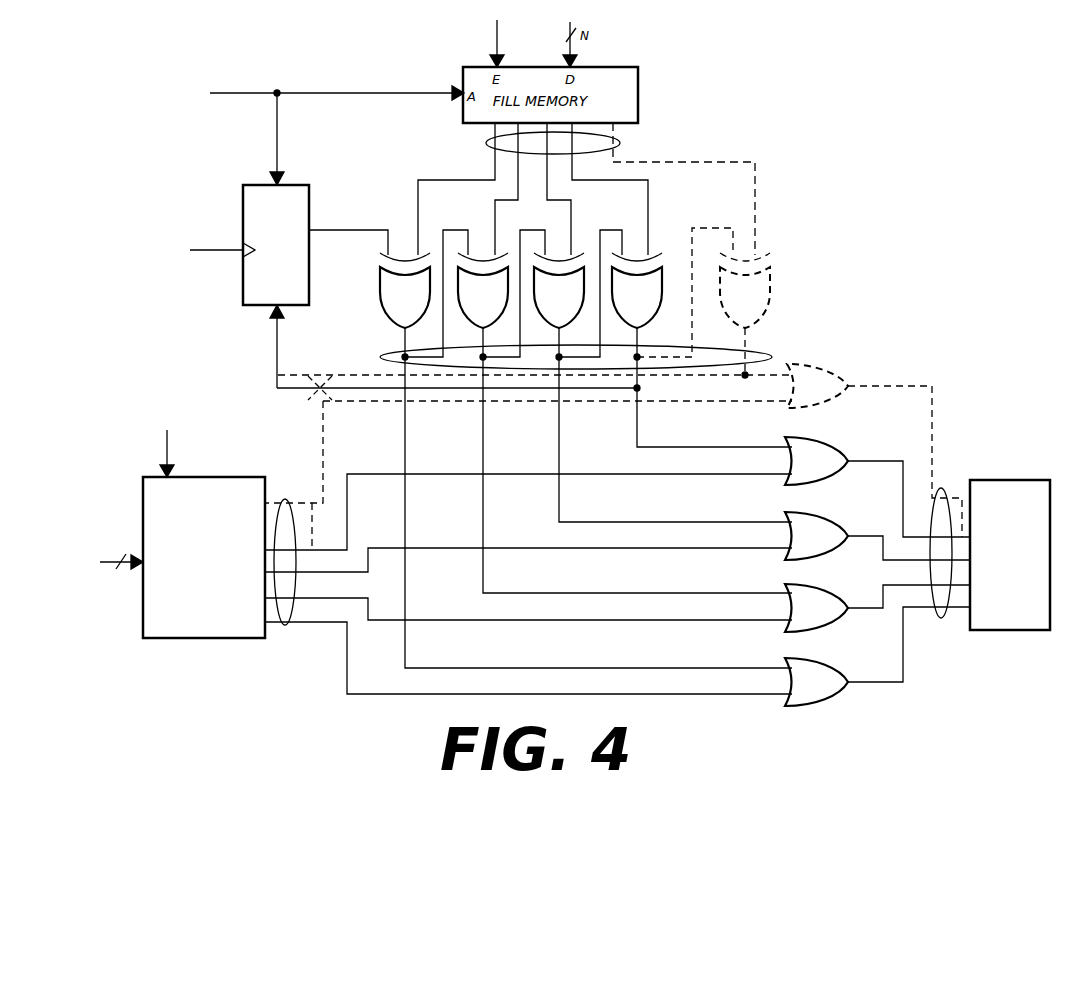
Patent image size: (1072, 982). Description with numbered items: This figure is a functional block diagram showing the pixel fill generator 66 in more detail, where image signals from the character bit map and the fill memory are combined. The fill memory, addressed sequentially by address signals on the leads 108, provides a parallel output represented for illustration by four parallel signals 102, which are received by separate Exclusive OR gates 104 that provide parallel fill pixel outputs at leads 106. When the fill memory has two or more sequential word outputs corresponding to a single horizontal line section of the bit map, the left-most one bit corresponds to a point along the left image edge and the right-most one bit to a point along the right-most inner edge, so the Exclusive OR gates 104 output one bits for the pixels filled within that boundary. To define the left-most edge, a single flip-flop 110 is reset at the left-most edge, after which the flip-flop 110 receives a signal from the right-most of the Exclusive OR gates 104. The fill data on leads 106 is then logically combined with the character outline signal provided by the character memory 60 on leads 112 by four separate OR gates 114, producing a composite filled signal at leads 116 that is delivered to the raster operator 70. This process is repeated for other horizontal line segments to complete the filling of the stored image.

The character memory 60 is at (210, 638).
The pixel fill generator 66 is at (890, 228).
The raster operator 70 is at (1010, 555).
The parallel signals 102 is at (628, 145).
The Exclusive OR gates 104 is at (772, 300).
The leads 106 is at (776, 347).
The leads 108 is at (258, 93).
The flip-flop 110 is at (248, 185).
The leads 112 is at (288, 632).
The OR gates 114 is at (832, 368).
The leads 116 is at (944, 632).